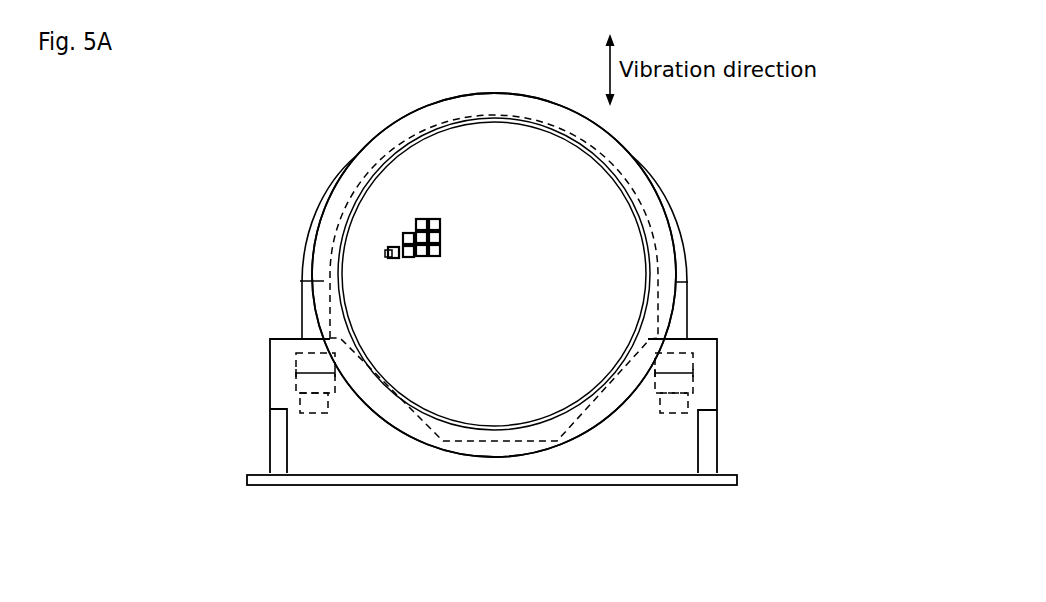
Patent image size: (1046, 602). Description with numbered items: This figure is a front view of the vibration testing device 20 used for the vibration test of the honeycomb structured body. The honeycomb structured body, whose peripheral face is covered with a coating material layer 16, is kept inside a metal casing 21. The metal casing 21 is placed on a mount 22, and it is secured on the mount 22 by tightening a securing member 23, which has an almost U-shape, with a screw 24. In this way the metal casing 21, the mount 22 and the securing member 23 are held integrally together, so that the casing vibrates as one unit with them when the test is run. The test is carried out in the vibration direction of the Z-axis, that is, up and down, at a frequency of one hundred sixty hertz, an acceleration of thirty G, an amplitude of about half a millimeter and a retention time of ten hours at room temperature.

The vibration testing device 20 is at (478, 65).
The metal casing 21 is at (590, 431).
The coating material layer 16 is at (548, 414).
The mount 22 is at (490, 443).
The securing member 23 is at (320, 207).
The screw 24 is at (338, 394).